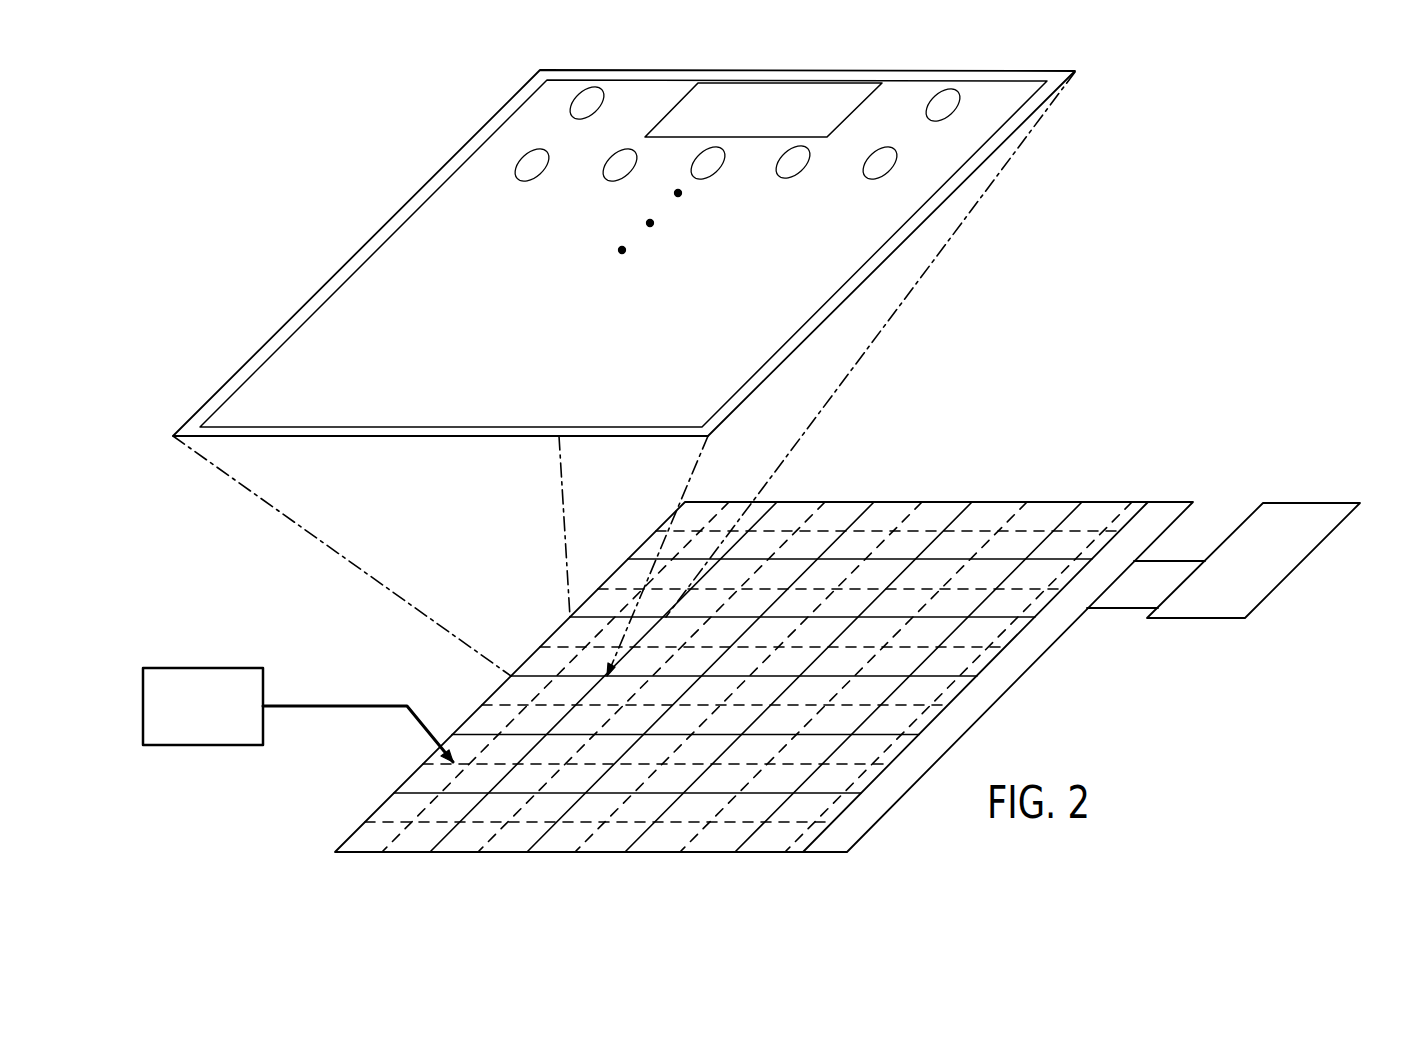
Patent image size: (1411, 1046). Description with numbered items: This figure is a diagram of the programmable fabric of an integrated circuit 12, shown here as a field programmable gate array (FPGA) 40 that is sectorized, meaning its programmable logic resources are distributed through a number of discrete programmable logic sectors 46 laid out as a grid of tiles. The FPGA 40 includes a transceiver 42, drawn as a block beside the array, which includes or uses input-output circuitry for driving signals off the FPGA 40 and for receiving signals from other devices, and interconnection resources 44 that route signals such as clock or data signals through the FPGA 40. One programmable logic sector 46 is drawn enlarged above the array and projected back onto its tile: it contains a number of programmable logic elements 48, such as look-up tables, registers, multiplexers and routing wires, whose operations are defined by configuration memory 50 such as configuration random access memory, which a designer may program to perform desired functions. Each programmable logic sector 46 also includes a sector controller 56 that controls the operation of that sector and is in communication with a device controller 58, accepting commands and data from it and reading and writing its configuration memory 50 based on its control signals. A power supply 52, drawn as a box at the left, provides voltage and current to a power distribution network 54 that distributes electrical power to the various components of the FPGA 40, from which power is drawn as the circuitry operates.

The integrated circuit 12 is at (953, 457).
The field programmable gate array (FPGA) 40 is at (748, 630).
The transceiver 42 is at (1280, 580).
The interconnection resources 44 is at (357, 252).
The programmable logic sector 46 is at (437, 92).
The programmable logic elements 48 is at (785, 141).
The configuration memory 50 is at (598, 86).
The power supply 52 is at (202, 668).
The power distribution network 54 is at (415, 813).
The sector controller 56 is at (783, 83).
The device controller 58 is at (587, 853).